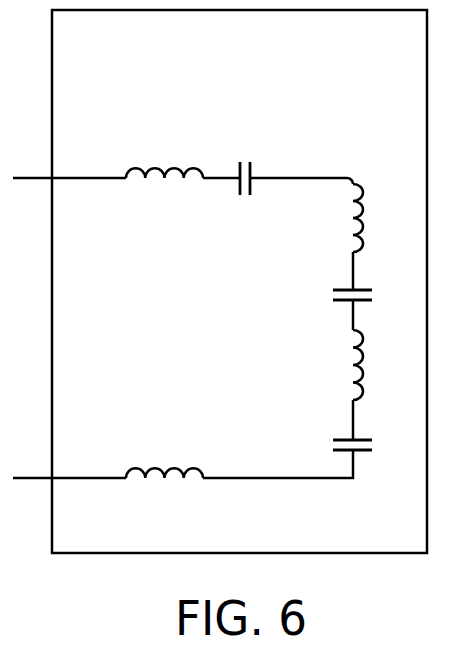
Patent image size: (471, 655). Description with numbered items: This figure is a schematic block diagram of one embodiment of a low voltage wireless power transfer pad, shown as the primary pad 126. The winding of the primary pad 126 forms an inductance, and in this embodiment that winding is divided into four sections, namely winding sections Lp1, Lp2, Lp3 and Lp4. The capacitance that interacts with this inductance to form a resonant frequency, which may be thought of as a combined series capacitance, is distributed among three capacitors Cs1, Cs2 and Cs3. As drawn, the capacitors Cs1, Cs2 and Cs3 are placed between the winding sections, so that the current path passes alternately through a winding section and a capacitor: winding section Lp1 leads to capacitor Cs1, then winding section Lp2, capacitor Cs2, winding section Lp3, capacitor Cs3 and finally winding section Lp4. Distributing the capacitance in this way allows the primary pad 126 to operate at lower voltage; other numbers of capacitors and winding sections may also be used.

The primary pad 126 is at (259, 73).
The winding section Lp1 is at (164, 189).
The capacitor Cs1 is at (238, 194).
The winding section Lp2 is at (337, 218).
The capacitor Cs2 is at (328, 292).
The winding section Lp3 is at (336, 365).
The capacitor Cs3 is at (328, 442).
The winding section Lp4 is at (164, 490).